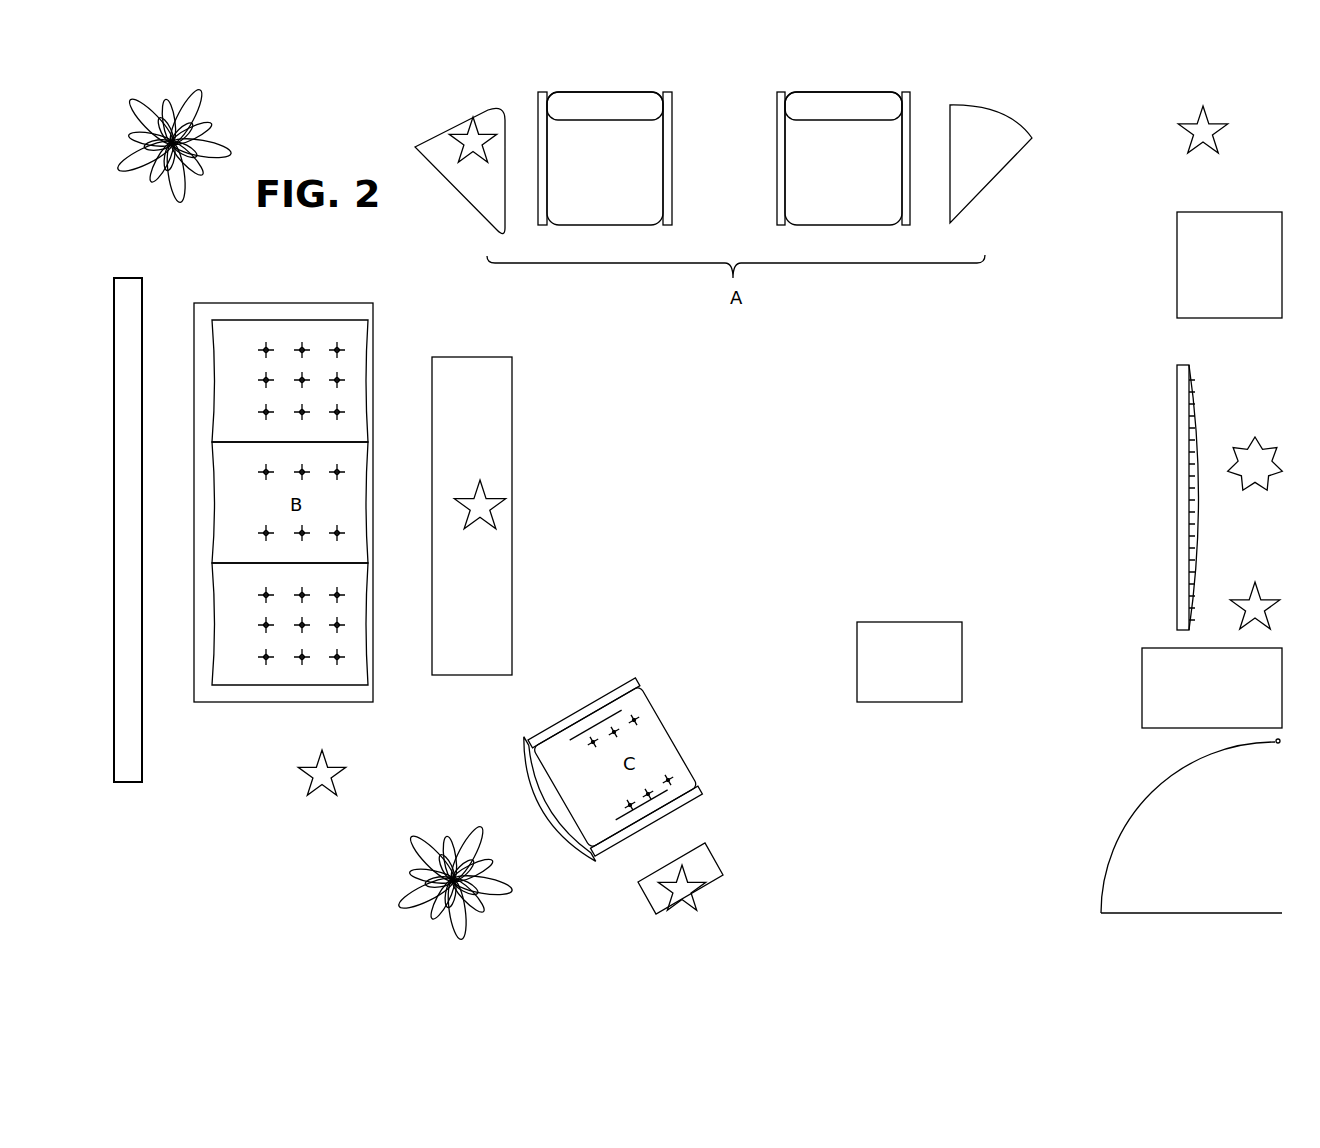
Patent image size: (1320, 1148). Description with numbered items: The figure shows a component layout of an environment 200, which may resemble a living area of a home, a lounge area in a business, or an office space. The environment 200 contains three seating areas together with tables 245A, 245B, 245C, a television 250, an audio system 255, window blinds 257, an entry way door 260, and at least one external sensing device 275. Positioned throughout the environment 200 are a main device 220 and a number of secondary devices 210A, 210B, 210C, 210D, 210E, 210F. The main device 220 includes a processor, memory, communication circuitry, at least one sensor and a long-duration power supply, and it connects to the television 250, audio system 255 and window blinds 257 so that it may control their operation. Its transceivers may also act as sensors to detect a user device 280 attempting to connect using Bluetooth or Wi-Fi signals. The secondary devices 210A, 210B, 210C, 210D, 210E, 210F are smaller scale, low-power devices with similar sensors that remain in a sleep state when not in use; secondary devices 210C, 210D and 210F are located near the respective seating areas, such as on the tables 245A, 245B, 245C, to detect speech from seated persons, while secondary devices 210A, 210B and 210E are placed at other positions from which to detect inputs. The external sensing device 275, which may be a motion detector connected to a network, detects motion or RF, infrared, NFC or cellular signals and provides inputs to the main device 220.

The environment 200 is at (312, 241).
The secondary device 210A is at (1193, 147).
The secondary device 210B is at (1254, 593).
The secondary device 210C is at (704, 897).
The secondary device 210D is at (512, 504).
The secondary device 210E is at (351, 772).
The secondary device 210F is at (458, 132).
The main device 220 is at (1255, 450).
The table 245A is at (495, 395).
The table 245B is at (478, 200).
The table 245C is at (723, 877).
The television 250 is at (1157, 432).
The audio system 255 is at (1212, 688).
The window blinds 257 is at (162, 742).
The entry way door 260 is at (1191, 826).
The external sensing device 275 is at (1229, 265).
The user device 280 is at (909, 662).